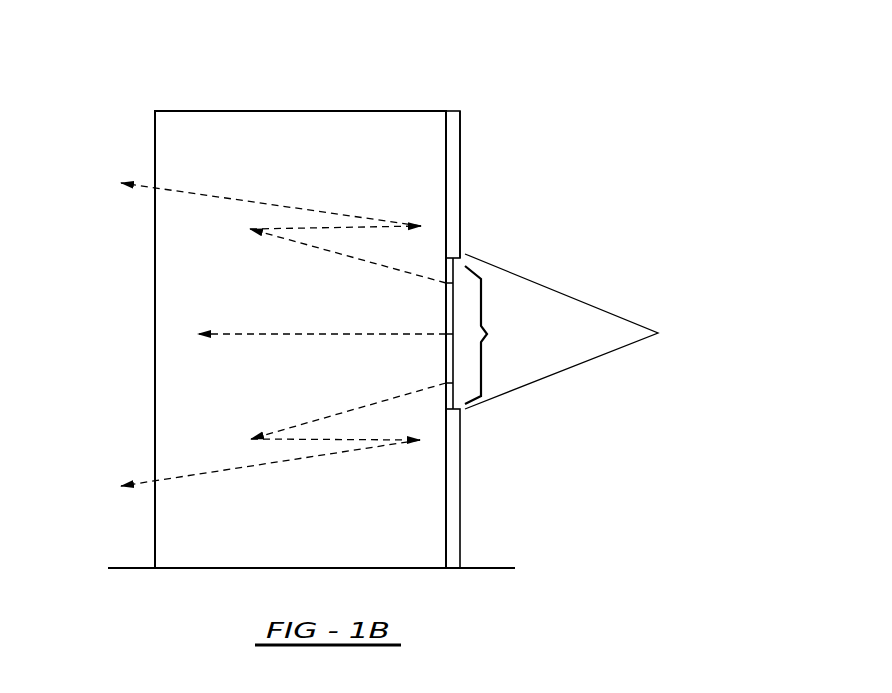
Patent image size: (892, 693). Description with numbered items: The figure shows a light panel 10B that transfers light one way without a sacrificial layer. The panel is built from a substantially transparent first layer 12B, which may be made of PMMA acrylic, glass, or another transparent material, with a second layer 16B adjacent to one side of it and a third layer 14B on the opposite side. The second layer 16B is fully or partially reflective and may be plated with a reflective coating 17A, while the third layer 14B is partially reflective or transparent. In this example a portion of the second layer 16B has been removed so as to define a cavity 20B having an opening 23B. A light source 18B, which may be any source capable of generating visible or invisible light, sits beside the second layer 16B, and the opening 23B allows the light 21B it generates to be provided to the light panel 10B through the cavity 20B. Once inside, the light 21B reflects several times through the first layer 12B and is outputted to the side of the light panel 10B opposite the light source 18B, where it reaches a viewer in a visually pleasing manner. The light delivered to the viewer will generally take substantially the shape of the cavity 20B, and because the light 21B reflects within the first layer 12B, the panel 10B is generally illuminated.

The light panel 10B is at (387, 306).
The first layer 12B is at (355, 130).
The third layer 14B is at (152, 273).
The second layer 16B is at (457, 200).
The reflective coating 17A is at (457, 143).
The light source 18B is at (550, 373).
The cavity 20B is at (491, 333).
The light 21B is at (195, 188).
The opening 23B is at (443, 397).